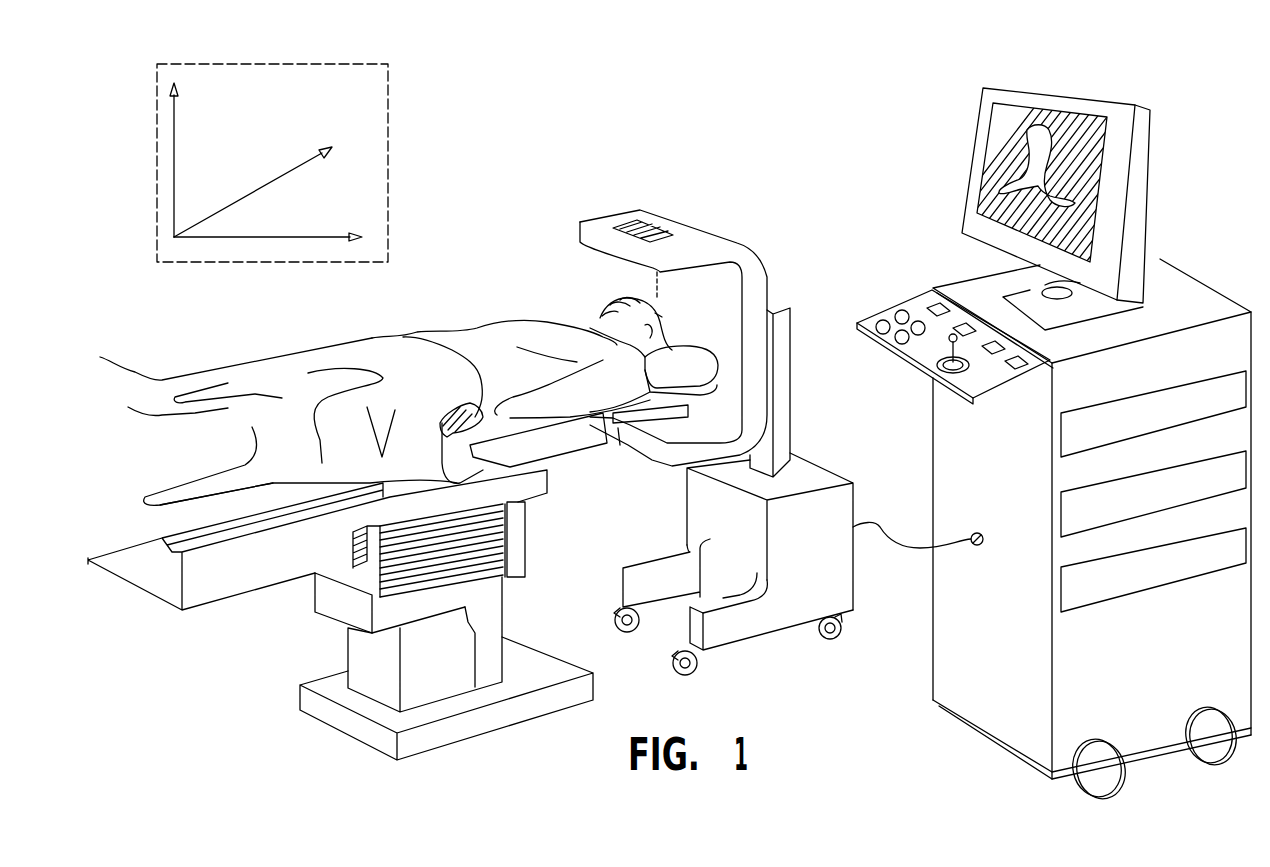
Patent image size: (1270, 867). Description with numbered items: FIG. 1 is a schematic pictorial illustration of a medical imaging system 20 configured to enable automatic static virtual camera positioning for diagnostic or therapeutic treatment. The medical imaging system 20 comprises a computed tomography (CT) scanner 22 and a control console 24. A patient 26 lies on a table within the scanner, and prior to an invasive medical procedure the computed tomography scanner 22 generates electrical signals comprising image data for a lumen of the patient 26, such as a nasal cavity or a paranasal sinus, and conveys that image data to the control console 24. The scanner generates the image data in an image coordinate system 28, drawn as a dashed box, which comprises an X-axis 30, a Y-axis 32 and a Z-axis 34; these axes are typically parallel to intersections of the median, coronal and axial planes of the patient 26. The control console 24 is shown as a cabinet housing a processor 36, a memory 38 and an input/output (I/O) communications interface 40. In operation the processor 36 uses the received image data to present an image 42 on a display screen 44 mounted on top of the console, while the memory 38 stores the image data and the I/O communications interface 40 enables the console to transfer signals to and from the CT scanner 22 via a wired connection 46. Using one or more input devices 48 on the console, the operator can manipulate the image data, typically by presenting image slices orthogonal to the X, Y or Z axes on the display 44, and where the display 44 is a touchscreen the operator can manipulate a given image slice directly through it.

The medical imaging system 20 is at (812, 84).
The computed tomography (CT) scanner 22 is at (808, 472).
The control console 24 is at (1171, 285).
The patient 26 is at (253, 373).
The image coordinate system 28 is at (388, 77).
The X-axis 30 is at (285, 173).
The Y-axis 32 is at (174, 148).
The Z-axis 34 is at (267, 237).
The processor 36 is at (1061, 432).
The memory 38 is at (1061, 511).
The input/output (I/O) communications interface 40 is at (1061, 591).
The image 42 is at (987, 178).
The display screen 44 is at (1064, 195).
The wired connection 46 is at (884, 546).
The input devices 48 is at (902, 317).